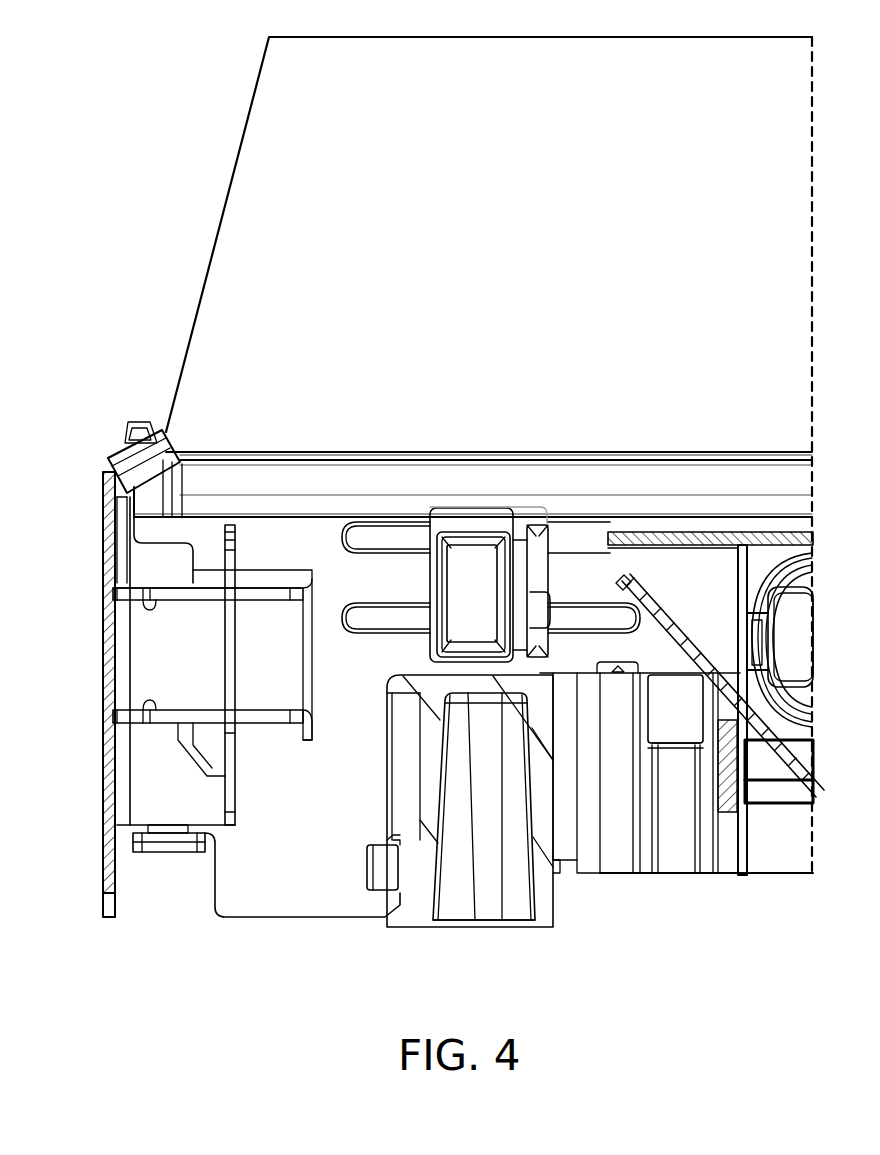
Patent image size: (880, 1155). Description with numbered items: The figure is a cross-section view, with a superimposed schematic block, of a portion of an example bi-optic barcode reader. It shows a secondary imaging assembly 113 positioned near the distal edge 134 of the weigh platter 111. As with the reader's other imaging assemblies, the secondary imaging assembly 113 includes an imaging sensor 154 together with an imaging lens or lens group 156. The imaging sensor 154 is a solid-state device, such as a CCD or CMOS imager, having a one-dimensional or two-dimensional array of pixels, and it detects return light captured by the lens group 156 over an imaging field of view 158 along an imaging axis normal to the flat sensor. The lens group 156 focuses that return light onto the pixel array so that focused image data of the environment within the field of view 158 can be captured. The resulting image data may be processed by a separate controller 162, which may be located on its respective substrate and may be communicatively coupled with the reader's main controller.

The imaging field of view 158 is at (250, 97).
The weigh platter 111 is at (592, 458).
The distal edge 134 is at (94, 407).
The secondary imaging assembly 113 is at (94, 444).
The lens group 156 is at (153, 467).
The imaging sensor 154 is at (128, 483).
The controller 162 is at (118, 567).